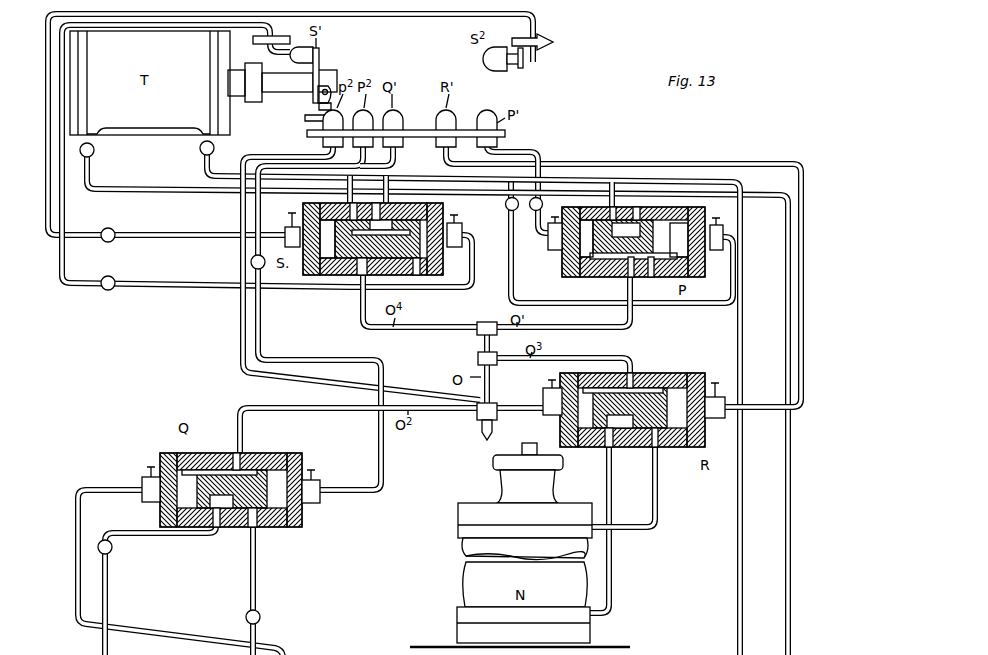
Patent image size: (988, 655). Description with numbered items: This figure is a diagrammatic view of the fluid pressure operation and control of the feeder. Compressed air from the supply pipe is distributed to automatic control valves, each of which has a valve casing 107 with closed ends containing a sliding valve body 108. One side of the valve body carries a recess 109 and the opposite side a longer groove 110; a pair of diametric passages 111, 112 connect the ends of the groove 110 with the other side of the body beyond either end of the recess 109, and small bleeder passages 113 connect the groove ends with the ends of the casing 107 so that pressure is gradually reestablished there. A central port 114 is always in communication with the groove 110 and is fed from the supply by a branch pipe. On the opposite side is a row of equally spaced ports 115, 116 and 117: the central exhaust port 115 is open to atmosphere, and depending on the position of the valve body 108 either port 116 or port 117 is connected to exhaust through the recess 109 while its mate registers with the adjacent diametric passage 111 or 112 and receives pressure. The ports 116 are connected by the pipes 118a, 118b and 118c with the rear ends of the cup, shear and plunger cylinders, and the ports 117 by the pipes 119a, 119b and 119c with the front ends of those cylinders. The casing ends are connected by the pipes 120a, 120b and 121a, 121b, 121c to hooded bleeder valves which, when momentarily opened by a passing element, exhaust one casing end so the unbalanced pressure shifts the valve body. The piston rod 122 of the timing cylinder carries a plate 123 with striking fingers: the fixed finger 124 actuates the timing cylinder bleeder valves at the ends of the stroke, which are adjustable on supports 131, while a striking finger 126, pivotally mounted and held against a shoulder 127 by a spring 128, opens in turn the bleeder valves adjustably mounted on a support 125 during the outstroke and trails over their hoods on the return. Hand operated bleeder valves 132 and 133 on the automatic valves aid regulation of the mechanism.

The valve casing 107 is at (428, 213).
The sliding valve body 108 is at (330, 278).
The recess 109 is at (221, 554).
The groove 110 is at (412, 275).
The diametric passage 111 is at (585, 207).
The diametric passage 112 is at (716, 226).
The bleeder passage 113 is at (575, 272).
The port 114 is at (357, 275).
The exhaust port 115 is at (643, 460).
The port 116 is at (660, 207).
The port 117 is at (610, 205).
The pipe 118a is at (138, 179).
The pipe 118b is at (108, 590).
The pipe 118c is at (611, 589).
The pipe 119a is at (206, 172).
The pipe 119b is at (255, 590).
The pipe 119c is at (656, 515).
The pipe 120a is at (538, 155).
The pipe 120b is at (802, 373).
The pipe 121a is at (176, 230).
The pipe 121b is at (103, 483).
The pipe 121c is at (240, 352).
The piston rod 122 is at (280, 58).
The plate 123 is at (330, 78).
The fixed finger 124 is at (322, 58).
The support 125 is at (424, 137).
The striking finger 126 is at (320, 100).
The shoulder 127 is at (318, 91).
The spring 128 is at (324, 106).
The support 131 is at (253, 40).
The hand operated bleeder valve 132 is at (464, 225).
The hand operated bleeder valve 133 is at (556, 413).